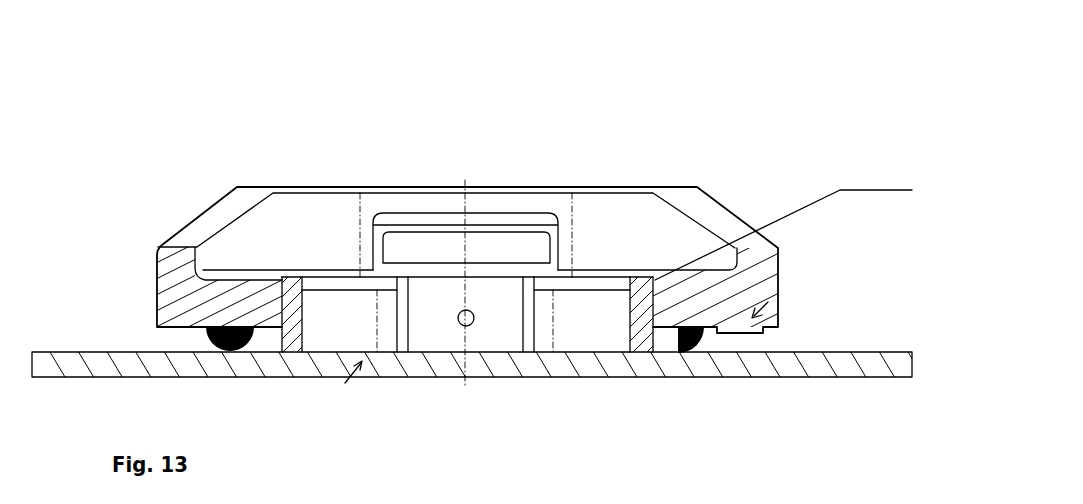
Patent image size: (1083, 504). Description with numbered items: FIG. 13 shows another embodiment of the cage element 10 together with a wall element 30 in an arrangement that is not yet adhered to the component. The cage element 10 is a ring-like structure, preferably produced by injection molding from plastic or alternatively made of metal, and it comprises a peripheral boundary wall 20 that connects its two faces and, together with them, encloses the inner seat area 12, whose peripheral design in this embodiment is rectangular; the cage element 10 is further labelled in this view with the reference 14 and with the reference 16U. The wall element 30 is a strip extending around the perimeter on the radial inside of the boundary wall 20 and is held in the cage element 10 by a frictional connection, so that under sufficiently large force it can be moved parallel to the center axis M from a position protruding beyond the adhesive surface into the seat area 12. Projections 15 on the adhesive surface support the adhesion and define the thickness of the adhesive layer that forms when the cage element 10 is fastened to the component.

The cage element 10 is at (236, 186).
The seat area 12 is at (322, 220).
The side wall 14 is at (628, 220).
The peripheral boundary wall 20 is at (156, 265).
The wall element 30 is at (293, 332).
The underside of housing 16U is at (669, 327).
The projections 15 is at (743, 332).
The center axis M is at (475, 292).